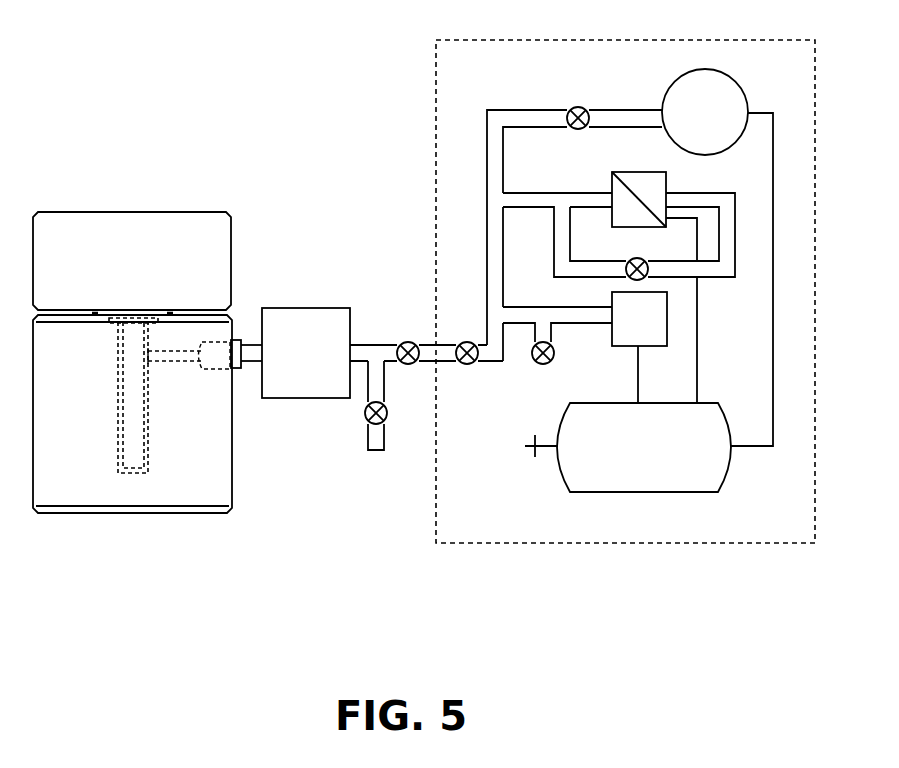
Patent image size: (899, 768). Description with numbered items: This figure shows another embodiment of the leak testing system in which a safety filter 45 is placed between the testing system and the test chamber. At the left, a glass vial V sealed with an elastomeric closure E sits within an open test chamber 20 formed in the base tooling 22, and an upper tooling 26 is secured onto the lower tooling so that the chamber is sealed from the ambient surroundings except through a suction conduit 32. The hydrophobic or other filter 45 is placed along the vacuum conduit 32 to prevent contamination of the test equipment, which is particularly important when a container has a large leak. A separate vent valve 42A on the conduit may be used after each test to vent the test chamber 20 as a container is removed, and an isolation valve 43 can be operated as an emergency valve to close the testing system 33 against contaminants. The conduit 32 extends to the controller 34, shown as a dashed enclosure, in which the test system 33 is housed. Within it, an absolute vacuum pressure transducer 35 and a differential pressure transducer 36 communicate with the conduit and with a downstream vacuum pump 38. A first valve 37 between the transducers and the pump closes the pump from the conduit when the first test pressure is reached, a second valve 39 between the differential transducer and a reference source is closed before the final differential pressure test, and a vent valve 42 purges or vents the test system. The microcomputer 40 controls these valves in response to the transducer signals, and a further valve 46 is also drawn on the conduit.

The test chamber 20 is at (118, 422).
The base tooling 22 is at (199, 500).
The upper tooling 26 is at (63, 212).
The elastomeric closure E is at (122, 318).
The glass vial V is at (119, 387).
The suction conduit 32 is at (355, 345).
The test system 33 is at (462, 205).
The controller 34 is at (526, 552).
The absolute vacuum pressure transducer 35 is at (622, 346).
The differential pressure transducer 36 is at (630, 172).
The first valve 37 is at (578, 107).
The vacuum pump 38 is at (668, 84).
The second valve 39 is at (637, 258).
The microcomputer 40 is at (636, 492).
The vent valve 42 is at (543, 364).
The separate vent valve 42A is at (366, 418).
The isolation valve 43 is at (470, 364).
The filter 45 is at (292, 308).
The valve 46 is at (408, 342).